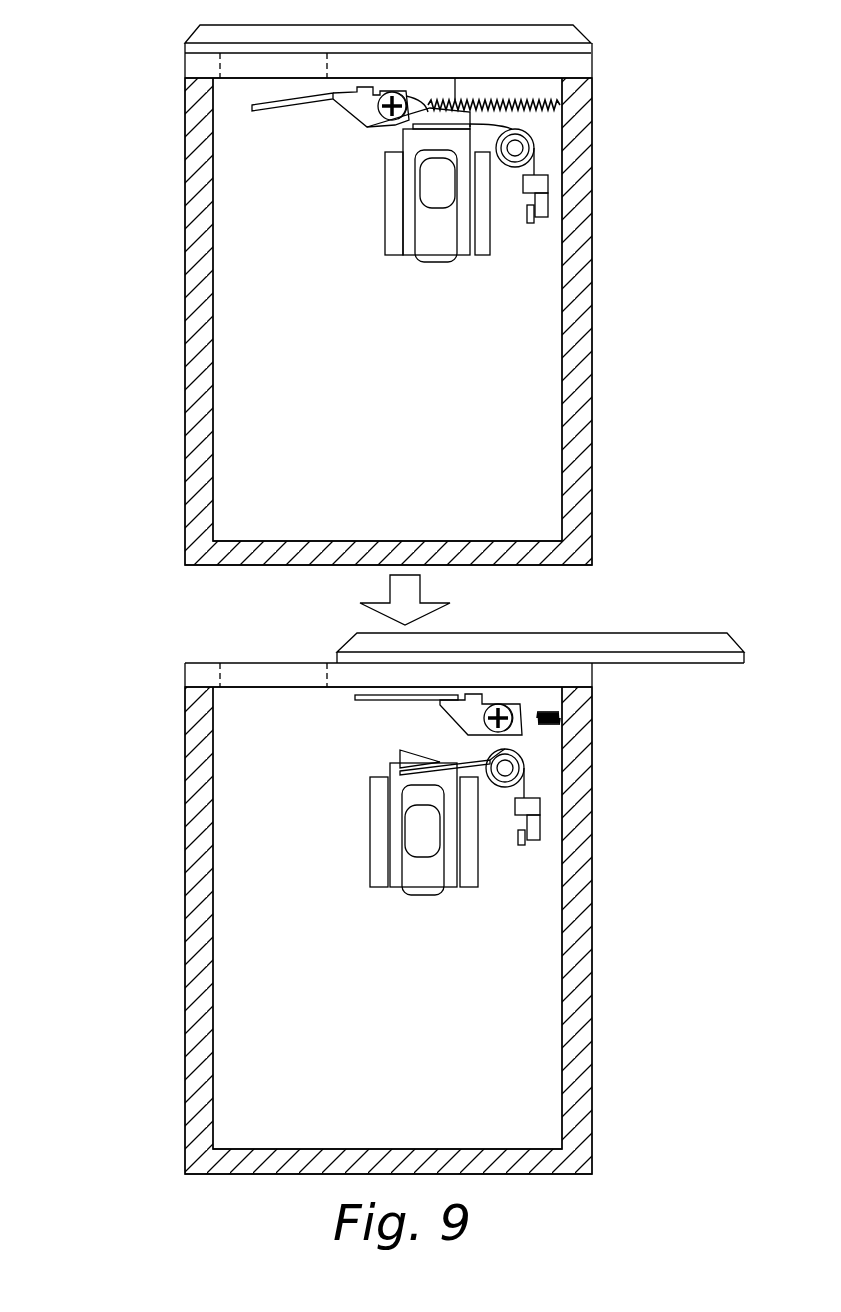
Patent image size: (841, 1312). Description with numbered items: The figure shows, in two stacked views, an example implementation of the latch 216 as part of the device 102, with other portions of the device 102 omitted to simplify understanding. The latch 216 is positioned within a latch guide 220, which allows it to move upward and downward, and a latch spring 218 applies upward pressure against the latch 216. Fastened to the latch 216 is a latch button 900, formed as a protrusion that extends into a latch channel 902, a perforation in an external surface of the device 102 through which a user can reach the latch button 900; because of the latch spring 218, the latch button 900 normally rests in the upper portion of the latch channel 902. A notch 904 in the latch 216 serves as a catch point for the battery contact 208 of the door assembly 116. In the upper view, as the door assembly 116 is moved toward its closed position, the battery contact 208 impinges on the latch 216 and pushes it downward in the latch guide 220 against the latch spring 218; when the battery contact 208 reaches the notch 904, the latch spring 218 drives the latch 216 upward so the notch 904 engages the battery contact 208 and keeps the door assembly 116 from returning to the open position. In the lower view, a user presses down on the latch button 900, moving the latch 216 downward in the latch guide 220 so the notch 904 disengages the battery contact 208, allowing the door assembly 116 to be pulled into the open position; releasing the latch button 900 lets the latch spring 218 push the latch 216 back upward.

The device 102 is at (177, 41).
The door assembly 116 is at (648, 23).
The battery contact 208 is at (257, 97).
The latch 216 is at (452, 238).
The latch spring 218 is at (535, 135).
The latch guide 220 is at (483, 263).
The latch button 900 is at (428, 178).
The latch channel 902 is at (413, 230).
The notch 904 is at (367, 127).